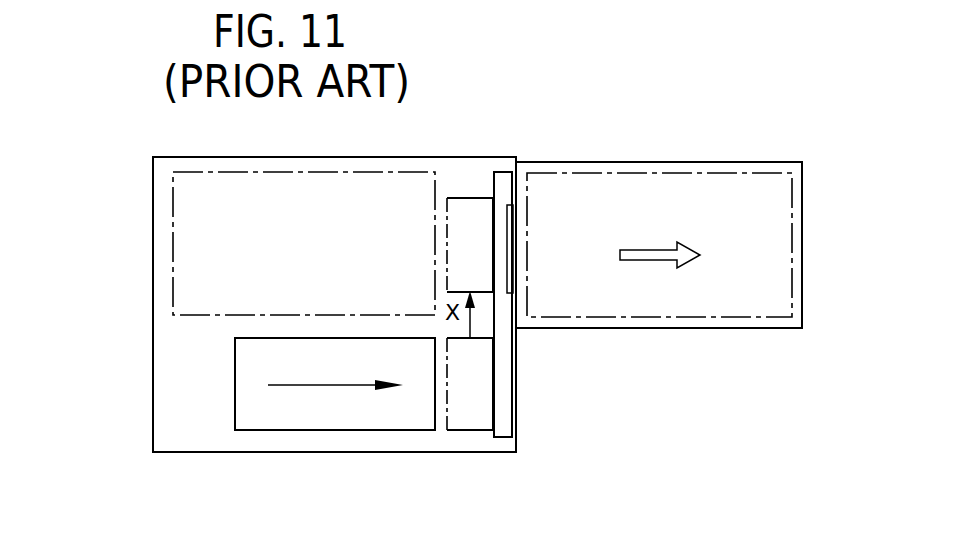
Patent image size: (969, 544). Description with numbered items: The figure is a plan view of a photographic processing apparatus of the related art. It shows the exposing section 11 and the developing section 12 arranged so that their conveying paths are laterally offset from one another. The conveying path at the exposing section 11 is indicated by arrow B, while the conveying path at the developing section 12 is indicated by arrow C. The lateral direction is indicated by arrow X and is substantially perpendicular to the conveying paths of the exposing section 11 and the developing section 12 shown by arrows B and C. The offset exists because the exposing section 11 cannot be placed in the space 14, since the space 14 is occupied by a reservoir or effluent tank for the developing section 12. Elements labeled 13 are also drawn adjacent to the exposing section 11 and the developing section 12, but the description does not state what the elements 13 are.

The exposing section 11 is at (277, 400).
The developing section 12 is at (748, 221).
The support members 13 is at (462, 206).
The space 14 is at (228, 234).